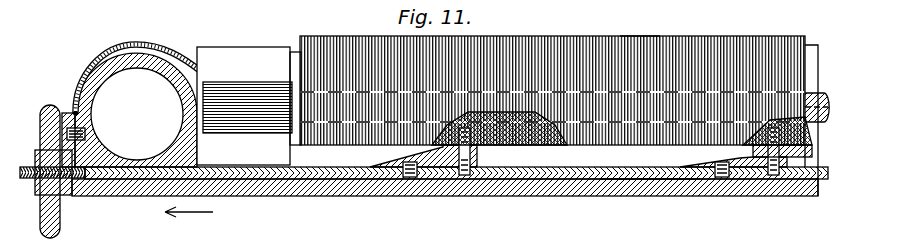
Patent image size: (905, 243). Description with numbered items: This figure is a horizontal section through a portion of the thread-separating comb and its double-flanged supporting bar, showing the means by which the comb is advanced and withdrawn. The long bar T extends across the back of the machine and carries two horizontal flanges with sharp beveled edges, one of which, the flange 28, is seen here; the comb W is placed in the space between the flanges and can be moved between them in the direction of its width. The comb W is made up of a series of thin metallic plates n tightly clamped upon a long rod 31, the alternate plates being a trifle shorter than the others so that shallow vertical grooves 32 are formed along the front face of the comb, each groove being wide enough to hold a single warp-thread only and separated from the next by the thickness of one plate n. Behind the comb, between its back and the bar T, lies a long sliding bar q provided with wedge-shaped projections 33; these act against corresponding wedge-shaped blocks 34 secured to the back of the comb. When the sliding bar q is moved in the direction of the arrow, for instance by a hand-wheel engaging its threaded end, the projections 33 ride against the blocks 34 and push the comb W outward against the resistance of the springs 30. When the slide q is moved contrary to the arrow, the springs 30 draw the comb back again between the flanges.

The horizontal flange 28 is at (249, 106).
The springs 30 is at (158, 31).
The long rod 31 is at (328, 145).
The shallow vertical grooves 32 is at (352, 36).
The wedge-shaped projections 33 is at (443, 170).
The wedge-shaped blocks 34 is at (500, 152).
The thread-separating comb W is at (298, 46).
The long bar T is at (252, 193).
The thin metallic plates n is at (631, 45).
The long sliding bar q is at (633, 173).